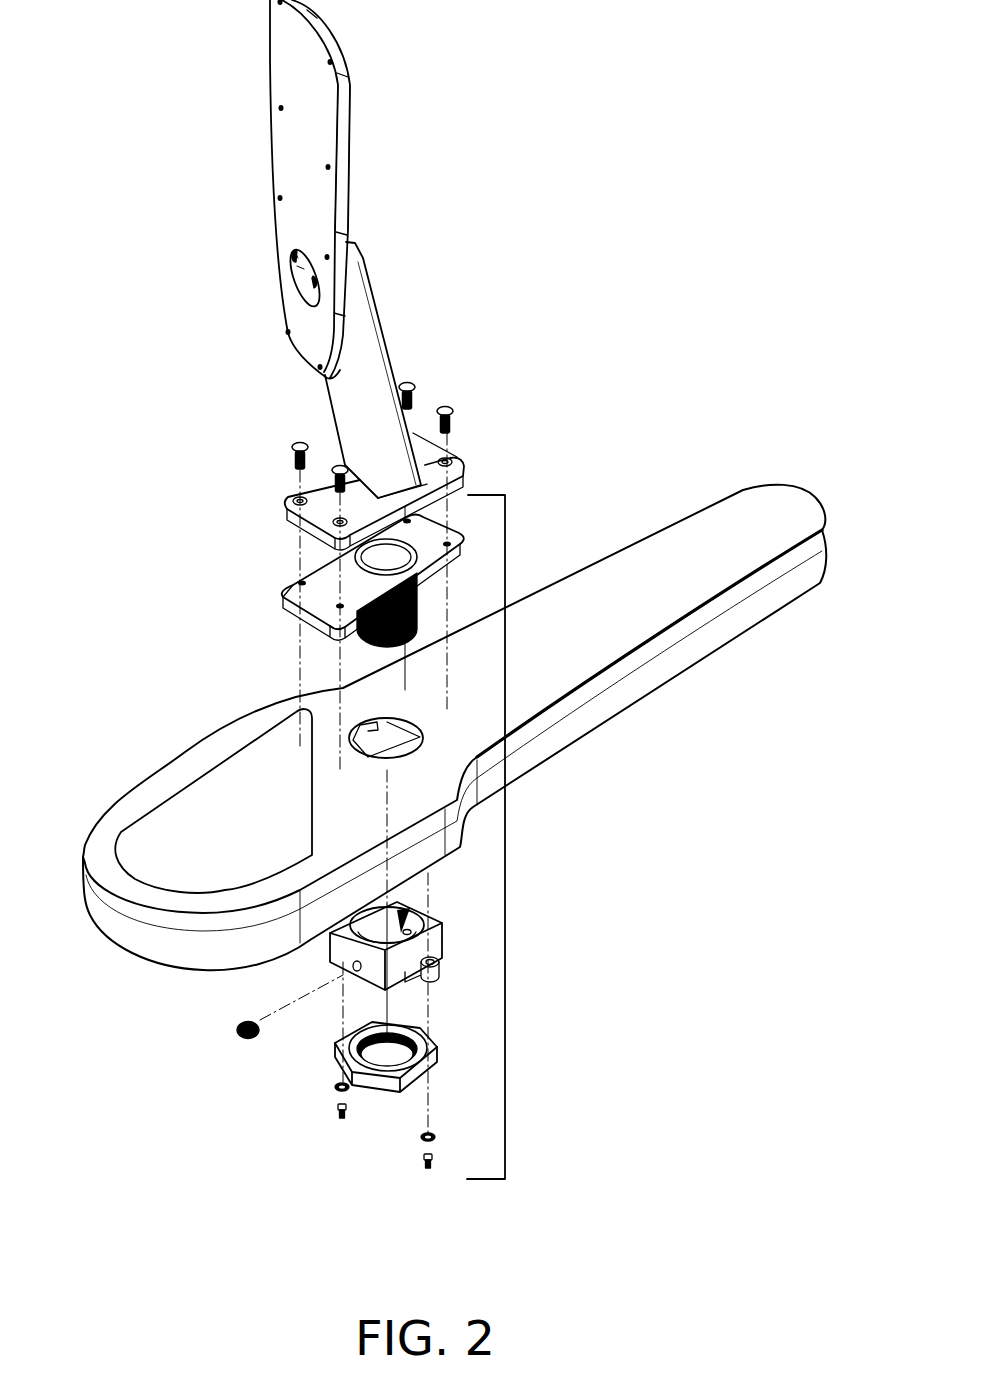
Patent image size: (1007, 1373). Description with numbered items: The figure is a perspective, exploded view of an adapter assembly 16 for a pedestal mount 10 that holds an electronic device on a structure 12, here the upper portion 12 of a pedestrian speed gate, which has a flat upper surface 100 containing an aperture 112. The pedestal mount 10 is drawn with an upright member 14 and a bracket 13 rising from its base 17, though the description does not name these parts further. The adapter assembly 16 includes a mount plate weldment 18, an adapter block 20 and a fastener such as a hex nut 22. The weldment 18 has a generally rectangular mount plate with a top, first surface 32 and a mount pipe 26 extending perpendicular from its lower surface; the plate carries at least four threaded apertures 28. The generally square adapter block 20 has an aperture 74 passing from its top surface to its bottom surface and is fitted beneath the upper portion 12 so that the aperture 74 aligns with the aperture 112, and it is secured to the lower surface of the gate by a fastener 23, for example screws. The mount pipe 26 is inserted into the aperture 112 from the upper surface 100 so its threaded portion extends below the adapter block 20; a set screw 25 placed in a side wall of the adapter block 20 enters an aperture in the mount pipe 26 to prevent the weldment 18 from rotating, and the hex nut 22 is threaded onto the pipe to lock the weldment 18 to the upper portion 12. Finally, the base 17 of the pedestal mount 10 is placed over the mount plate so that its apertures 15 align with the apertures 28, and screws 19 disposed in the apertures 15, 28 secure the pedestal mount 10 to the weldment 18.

The pedestal mount 10 is at (358, 127).
The upper portion of the speed gate 12 is at (833, 550).
The gusset bracket 13 is at (360, 327).
The panel 14 is at (290, 63).
The apertures 15 is at (295, 503).
The adapter assembly 16 is at (505, 850).
The base 17 is at (318, 513).
The mount plate weldment 18 is at (287, 590).
The screws 19 is at (338, 470).
The adapter block 20 is at (330, 955).
The hex nut 22 is at (373, 1090).
The fastener 23 is at (342, 1118).
The set screw 25 is at (248, 1040).
The mount pipe 26 is at (417, 593).
The threaded apertures 28 is at (332, 608).
The first surface 32 is at (268, 592).
The aperture 74 is at (422, 915).
The flat upper surface 100 is at (673, 532).
The aperture 112 is at (388, 760).